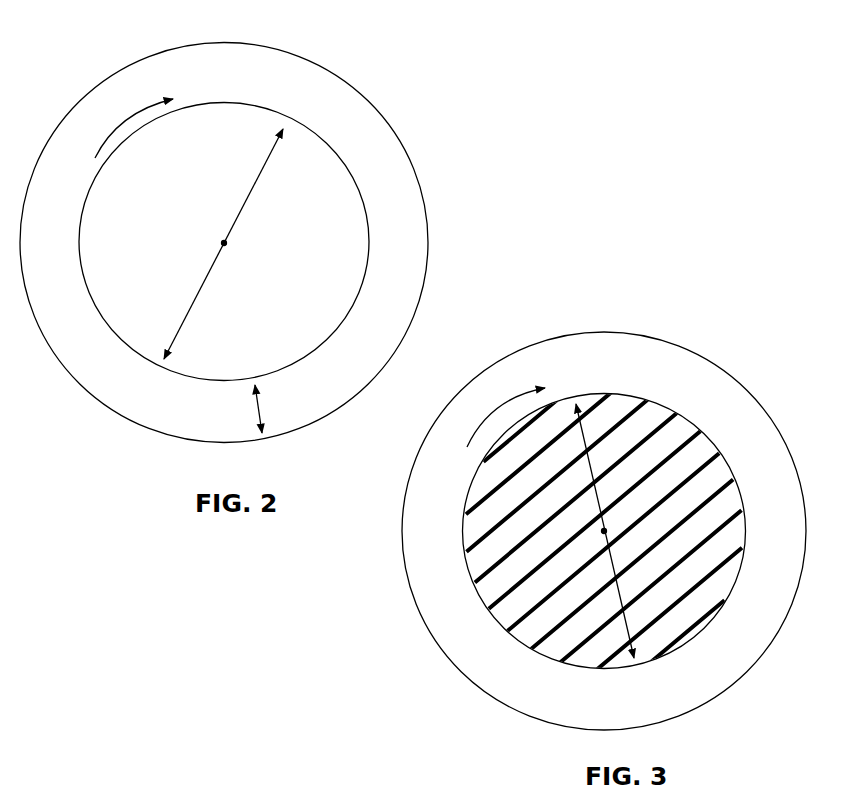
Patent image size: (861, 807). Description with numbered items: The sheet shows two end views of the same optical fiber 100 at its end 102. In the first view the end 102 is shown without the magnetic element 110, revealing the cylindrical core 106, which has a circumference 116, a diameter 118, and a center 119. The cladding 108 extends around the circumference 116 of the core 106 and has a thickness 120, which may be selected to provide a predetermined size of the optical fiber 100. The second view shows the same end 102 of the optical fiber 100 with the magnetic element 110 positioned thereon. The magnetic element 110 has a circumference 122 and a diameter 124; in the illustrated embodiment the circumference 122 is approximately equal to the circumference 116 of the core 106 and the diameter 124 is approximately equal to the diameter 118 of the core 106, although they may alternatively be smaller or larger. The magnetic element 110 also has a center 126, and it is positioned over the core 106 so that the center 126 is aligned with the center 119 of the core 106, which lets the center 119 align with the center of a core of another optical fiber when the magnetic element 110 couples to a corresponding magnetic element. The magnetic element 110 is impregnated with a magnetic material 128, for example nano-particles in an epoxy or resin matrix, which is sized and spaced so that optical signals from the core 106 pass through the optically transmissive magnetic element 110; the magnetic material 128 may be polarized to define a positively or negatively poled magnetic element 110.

In FIG. 2, the optical fiber 100 is at (380, 42).
In FIG. 3, the optical fiber 100 is at (747, 266).
In FIG. 2, the end 102 is at (412, 93).
In FIG. 3, the end 102 is at (624, 306).
In FIG. 2, the core 106 is at (332, 240).
In FIG. 2, the cladding 108 is at (376, 358).
In FIG. 3, the magnetic element 110 is at (693, 445).
In FIG. 2, the circumference 116 is at (114, 135).
In FIG. 2, the diameter 118 is at (200, 296).
In FIG. 2, the center 119 is at (226, 243).
In FIG. 2, the thickness 120 is at (259, 401).
In FIG. 3, the circumference 122 is at (486, 420).
In FIG. 3, the diameter 124 is at (610, 558).
In FIG. 3, the center 126 is at (606, 531).
In FIG. 3, the magnetic material 128 is at (702, 470).